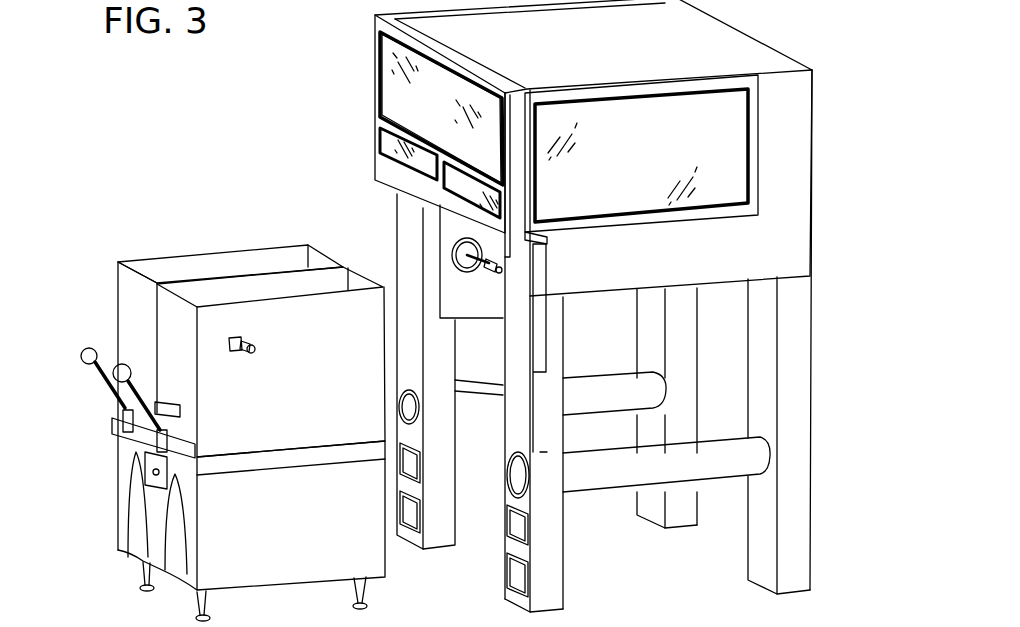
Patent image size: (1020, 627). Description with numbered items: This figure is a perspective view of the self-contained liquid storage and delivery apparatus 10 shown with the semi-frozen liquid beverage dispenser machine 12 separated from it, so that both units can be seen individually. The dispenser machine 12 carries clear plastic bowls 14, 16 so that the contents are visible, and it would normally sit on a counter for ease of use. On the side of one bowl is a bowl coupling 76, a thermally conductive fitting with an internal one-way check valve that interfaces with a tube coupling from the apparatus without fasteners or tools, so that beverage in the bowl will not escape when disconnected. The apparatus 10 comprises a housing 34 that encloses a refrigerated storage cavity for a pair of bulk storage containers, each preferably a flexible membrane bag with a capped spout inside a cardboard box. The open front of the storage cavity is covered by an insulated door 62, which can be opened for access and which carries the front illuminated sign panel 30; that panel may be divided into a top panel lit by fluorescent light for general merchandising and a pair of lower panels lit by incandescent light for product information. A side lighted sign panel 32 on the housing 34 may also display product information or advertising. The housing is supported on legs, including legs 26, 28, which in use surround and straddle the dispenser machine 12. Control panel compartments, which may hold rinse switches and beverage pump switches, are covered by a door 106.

The self-contained liquid storage and delivery apparatus 10 is at (112, 226).
The semi-frozen liquid beverage dispenser machine 12 is at (320, 523).
The clear plastic bowl 14 is at (128, 312).
The clear plastic bowl 16 is at (326, 424).
The leg 26 is at (673, 528).
The leg 28 is at (760, 582).
The front illuminated sign panel 30 is at (407, 100).
The side lighted sign panel 32 is at (693, 135).
The housing 34 is at (780, 182).
The insulated door 62 is at (385, 55).
The bowl coupling 76 is at (247, 337).
The door 106 is at (524, 288).